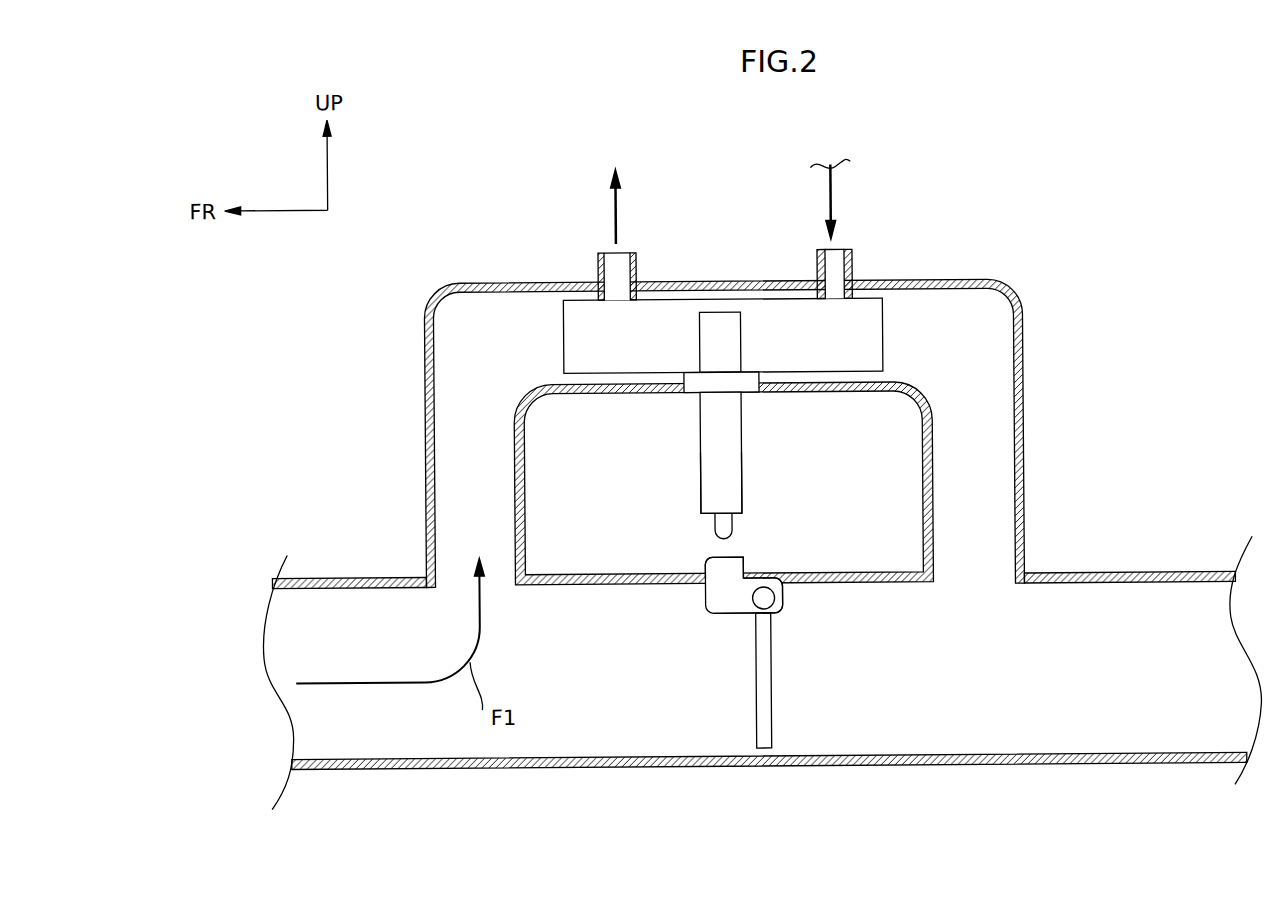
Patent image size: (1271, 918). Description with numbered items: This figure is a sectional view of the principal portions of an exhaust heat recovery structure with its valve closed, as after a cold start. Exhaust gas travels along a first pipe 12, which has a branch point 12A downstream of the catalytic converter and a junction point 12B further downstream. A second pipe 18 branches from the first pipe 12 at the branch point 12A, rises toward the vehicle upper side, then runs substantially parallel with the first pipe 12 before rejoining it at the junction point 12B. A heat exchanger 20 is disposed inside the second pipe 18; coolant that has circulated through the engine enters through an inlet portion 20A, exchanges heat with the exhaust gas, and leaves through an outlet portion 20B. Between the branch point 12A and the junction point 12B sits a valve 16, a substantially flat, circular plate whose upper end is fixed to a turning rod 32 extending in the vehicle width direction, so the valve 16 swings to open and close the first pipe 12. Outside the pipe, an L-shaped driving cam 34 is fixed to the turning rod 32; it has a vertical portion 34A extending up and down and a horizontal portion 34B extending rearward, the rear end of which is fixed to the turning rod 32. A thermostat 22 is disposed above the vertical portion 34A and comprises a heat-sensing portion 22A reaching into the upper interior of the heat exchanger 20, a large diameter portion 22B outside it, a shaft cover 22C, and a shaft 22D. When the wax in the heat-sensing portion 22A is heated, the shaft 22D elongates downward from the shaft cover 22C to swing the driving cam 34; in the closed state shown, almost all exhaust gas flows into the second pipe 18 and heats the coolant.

The first pipe 12 is at (570, 768).
The branch point 12A is at (426, 577).
The junction point 12B is at (1030, 573).
The valve 16 is at (771, 720).
The second pipe 18 is at (517, 281).
The heat exchanger 20 is at (886, 324).
The inlet portion 20A is at (855, 263).
The outlet portion 20B is at (638, 265).
The thermostat 22 is at (745, 435).
The heat-sensing portion 22A is at (743, 322).
The large diameter portion 22B is at (690, 394).
The shaft cover 22C is at (744, 472).
The shaft 22D is at (734, 531).
The turning rod 32 is at (776, 598).
The driving cam 34 is at (703, 603).
The vertical portion 34A is at (706, 564).
The horizontal portion 34B is at (732, 617).